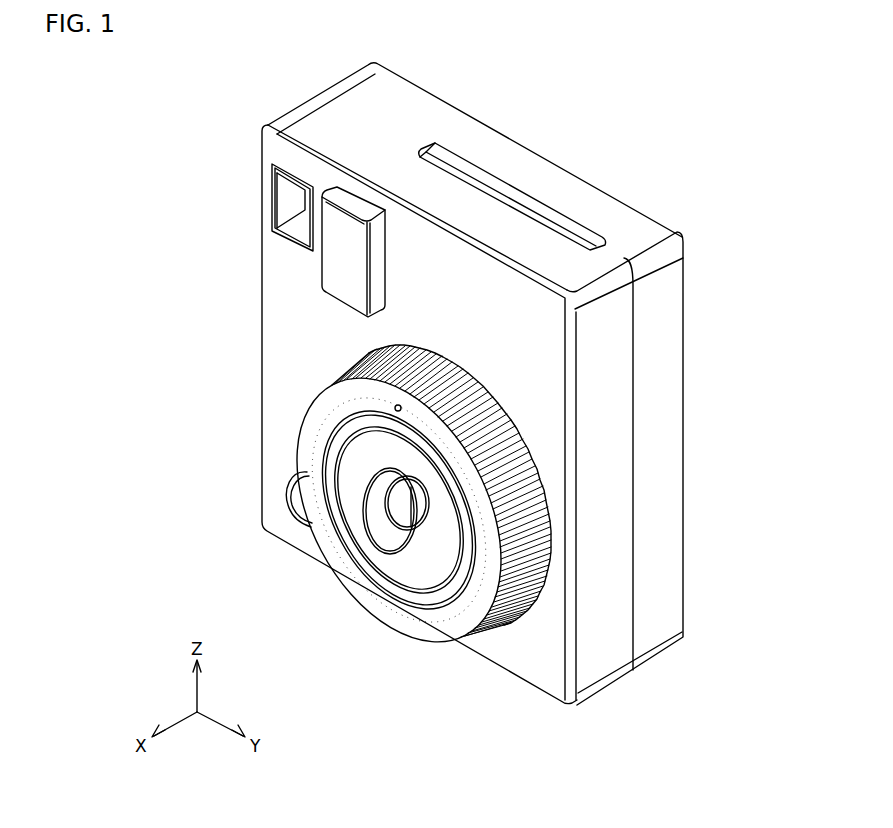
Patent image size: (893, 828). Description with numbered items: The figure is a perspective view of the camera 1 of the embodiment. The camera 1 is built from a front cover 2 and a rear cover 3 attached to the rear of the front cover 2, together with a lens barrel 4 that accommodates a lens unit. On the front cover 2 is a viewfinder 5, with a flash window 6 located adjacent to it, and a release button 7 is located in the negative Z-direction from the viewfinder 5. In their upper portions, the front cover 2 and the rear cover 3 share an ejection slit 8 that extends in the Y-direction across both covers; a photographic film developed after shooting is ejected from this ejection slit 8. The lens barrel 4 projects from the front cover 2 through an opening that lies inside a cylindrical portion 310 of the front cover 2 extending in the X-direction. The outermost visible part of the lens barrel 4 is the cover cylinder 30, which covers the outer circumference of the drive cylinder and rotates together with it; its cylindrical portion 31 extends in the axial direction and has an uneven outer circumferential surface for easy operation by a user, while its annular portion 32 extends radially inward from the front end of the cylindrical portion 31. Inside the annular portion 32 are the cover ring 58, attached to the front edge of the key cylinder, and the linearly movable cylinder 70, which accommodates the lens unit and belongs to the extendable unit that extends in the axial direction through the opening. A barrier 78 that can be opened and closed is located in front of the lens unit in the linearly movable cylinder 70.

The camera 1 is at (202, 111).
The front cover 2 is at (273, 372).
The rear cover 3 is at (670, 373).
The lens barrel 4 is at (509, 634).
The viewfinder 5 is at (287, 203).
The flash window 6 is at (333, 270).
The release button 7 is at (298, 506).
The ejection slit 8 is at (457, 167).
The cover cylinder 30 is at (290, 441).
The cylindrical portion 31 is at (527, 475).
The cylindrical portion 310 is at (540, 515).
The annular portion 32 is at (340, 557).
The cover ring 58 is at (425, 607).
The linearly movable cylinder 70 is at (402, 583).
The barrier 78 is at (398, 505).